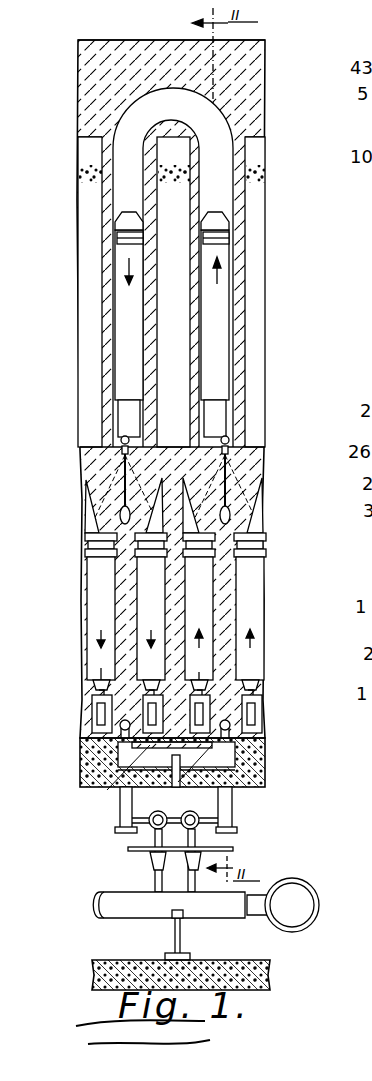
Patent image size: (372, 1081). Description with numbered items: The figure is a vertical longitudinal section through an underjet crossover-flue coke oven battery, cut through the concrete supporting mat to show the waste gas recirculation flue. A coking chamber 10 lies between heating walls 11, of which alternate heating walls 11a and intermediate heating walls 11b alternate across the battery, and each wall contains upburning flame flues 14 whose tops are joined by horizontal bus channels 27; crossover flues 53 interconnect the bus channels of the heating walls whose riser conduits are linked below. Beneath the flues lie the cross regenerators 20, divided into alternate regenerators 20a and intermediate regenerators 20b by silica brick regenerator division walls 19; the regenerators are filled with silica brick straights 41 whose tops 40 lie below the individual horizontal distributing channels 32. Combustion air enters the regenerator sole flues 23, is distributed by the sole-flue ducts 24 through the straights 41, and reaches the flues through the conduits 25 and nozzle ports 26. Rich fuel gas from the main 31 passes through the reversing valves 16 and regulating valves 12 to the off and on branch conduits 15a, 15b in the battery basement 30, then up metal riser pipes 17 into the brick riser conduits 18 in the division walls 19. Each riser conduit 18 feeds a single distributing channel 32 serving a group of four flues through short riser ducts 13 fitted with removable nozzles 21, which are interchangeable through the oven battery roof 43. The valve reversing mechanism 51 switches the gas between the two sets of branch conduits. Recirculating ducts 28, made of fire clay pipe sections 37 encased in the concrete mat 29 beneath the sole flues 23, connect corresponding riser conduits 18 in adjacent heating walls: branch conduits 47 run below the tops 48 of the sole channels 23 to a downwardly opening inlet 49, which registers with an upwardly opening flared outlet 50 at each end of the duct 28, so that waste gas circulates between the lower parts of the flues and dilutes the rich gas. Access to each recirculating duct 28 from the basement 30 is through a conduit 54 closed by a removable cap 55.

The coking chamber 10 is at (175, 389).
The heating wall 11 is at (223, 324).
The alternate heating wall 11a is at (142, 390).
The intermediate heating wall 11b is at (265, 324).
The regulating valve 12 is at (175, 848).
The riser duct 13 is at (124, 497).
The flame flue 14 is at (131, 356).
The off branch conduit 15a is at (153, 808).
The on branch conduit 15b is at (193, 808).
The reversing valve 16 is at (163, 872).
The metal riser pipe 17 is at (118, 825).
The riser conduit 18 is at (291, 539).
The regenerator division wall 19 is at (88, 582).
The cross regenerator 20 is at (200, 618).
The alternate regenerator 20a is at (227, 618).
The intermediate regenerator 20b is at (130, 618).
The port-determining nozzle 21 is at (120, 438).
The regenerator sole flue 23 is at (97, 700).
The sole-flue duct 24 is at (152, 664).
The regenerator conduit 25 is at (90, 478).
The nozzle port 26 is at (120, 452).
The bus channel 27 is at (218, 222).
The recirculating duct 28 is at (177, 774).
The concrete mat 29 is at (265, 772).
The battery basement 30 is at (170, 837).
The fuel gas main 31 is at (227, 912).
The distributing channel 32 is at (230, 517).
The fire clay pipe section 37 is at (120, 782).
The top of regenerator brick 40 is at (268, 528).
The silica brick straights 41 is at (268, 552).
The oven battery roof 43 is at (88, 83).
The branch conduit 47 is at (120, 727).
The top of sole channel 48 is at (262, 677).
The downwardly opening inlet 49 is at (118, 742).
The flared outlet 50 is at (128, 757).
The valve reversing mechanism 51 is at (128, 849).
The crossover flue 53 is at (153, 100).
The access conduit 54 is at (181, 785).
The cap 55 is at (240, 790).